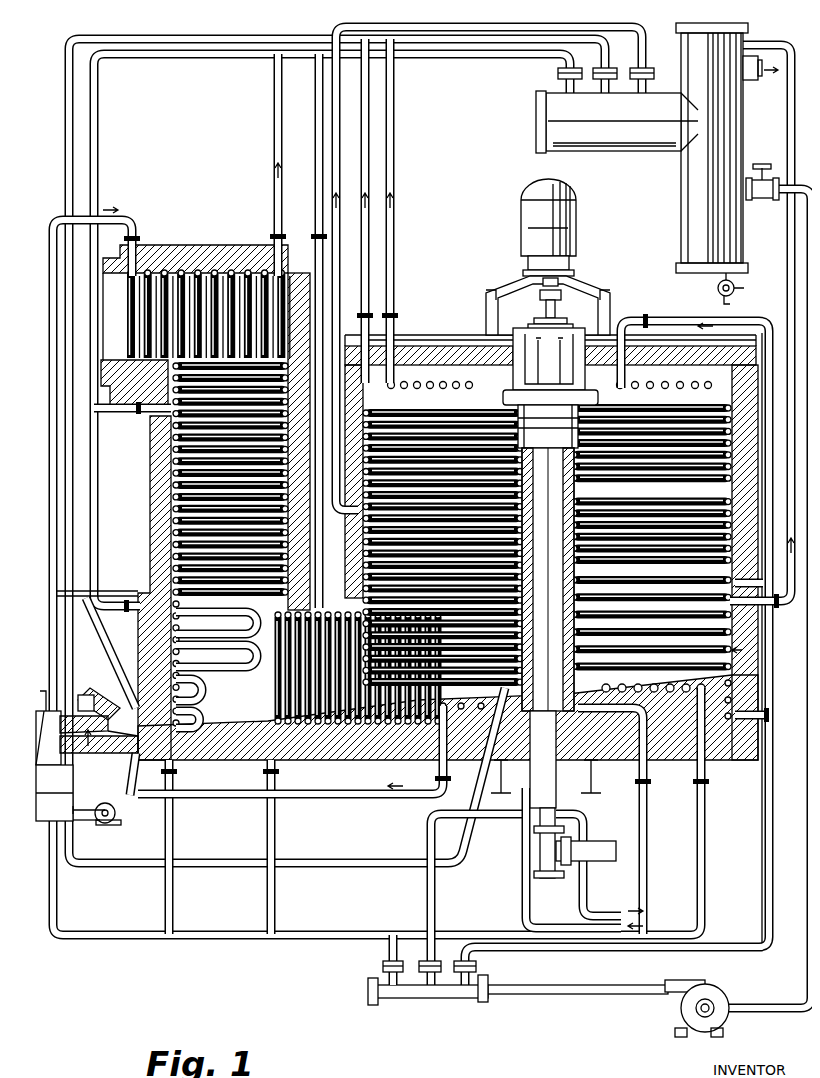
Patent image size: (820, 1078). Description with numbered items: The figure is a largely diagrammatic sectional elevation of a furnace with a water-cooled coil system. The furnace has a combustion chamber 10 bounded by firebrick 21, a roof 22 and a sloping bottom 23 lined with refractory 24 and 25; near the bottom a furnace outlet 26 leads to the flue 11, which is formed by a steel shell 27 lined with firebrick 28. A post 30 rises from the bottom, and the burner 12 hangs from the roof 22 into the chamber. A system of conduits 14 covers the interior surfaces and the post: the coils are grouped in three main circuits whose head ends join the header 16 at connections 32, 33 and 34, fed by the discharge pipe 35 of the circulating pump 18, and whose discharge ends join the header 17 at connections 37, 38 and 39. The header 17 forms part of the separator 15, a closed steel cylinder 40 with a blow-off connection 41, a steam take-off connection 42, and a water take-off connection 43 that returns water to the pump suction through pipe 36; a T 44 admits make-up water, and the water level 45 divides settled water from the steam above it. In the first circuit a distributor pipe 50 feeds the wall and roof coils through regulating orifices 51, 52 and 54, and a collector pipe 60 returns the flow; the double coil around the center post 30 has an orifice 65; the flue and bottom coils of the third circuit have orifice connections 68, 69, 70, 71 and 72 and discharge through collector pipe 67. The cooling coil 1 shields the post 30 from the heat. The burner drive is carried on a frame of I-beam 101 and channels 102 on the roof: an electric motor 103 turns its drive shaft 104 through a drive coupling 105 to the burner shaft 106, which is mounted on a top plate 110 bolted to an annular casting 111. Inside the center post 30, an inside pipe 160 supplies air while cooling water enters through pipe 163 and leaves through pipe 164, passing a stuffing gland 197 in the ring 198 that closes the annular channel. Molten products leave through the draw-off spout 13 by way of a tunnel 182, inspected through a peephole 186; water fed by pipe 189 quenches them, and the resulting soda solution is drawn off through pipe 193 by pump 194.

The cooling coil 1 is at (579, 493).
The combustion chamber 10 is at (470, 430).
The flue 11 is at (160, 470).
The burner 12 is at (548, 568).
The draw-off spout 13 is at (96, 779).
The system of conduits 14 is at (199, 946).
The separator 15 is at (669, 192).
The header 16 is at (364, 997).
The header 17 is at (536, 128).
The pump 18 is at (702, 992).
The firebrick 21 is at (742, 640).
The roof 22 is at (410, 335).
The sloping bottom 23 is at (740, 752).
The refractory 24 is at (430, 338).
The refractory 25 is at (683, 805).
The furnace outlet 26 is at (288, 665).
The steel shell 27 is at (200, 238).
The firebrick 28 is at (205, 411).
The post 30 is at (547, 772).
The connection 32 is at (474, 996).
The connection 33 is at (420, 930).
The connection 34 is at (388, 992).
The discharge pipe 35 is at (585, 986).
The pipe 36 is at (771, 700).
The connection 37 is at (634, 85).
The connection 38 is at (597, 85).
The connection 39 is at (548, 62).
The steel cylinder 40 is at (722, 100).
The blow-off connection 41 is at (727, 282).
The steam take-off connection 42 is at (752, 70).
The water take-off connection 43 is at (740, 192).
The T 44 is at (770, 192).
The water level 45 is at (525, 115).
The distributor pipe 50 is at (770, 888).
The orifice 51 is at (764, 708).
The orifice 52 is at (780, 598).
The orifice 54 is at (630, 310).
The collector pipe 60 is at (330, 922).
The regulating orifice 65 is at (655, 765).
The collector pipe 67 is at (176, 50).
The orifice connection 68 is at (700, 770).
The orifice connection 69 is at (258, 765).
The orifice connection 70 is at (165, 765).
The orifice connection 71 is at (127, 582).
The orifice connection 72 is at (130, 214).
The I-beam 101 is at (47, 700).
The channels 102 is at (478, 297).
The electric motor 103 is at (512, 222).
The drive shaft 104 is at (552, 276).
The drive coupling 105 is at (556, 290).
The burner shaft 106 is at (548, 297).
The top plate 110 is at (578, 320).
The annular casting 111 is at (505, 362).
The inside pipe 160 is at (608, 840).
The pipe 163 is at (516, 868).
The pipe 164 is at (585, 906).
The tunnel 182 is at (126, 696).
The peephole 186 is at (54, 793).
The pipe 189 is at (54, 802).
The pipe 193 is at (85, 812).
The pump 194 is at (105, 815).
The stuffing gland 197 is at (578, 772).
The ring 198 is at (515, 806).